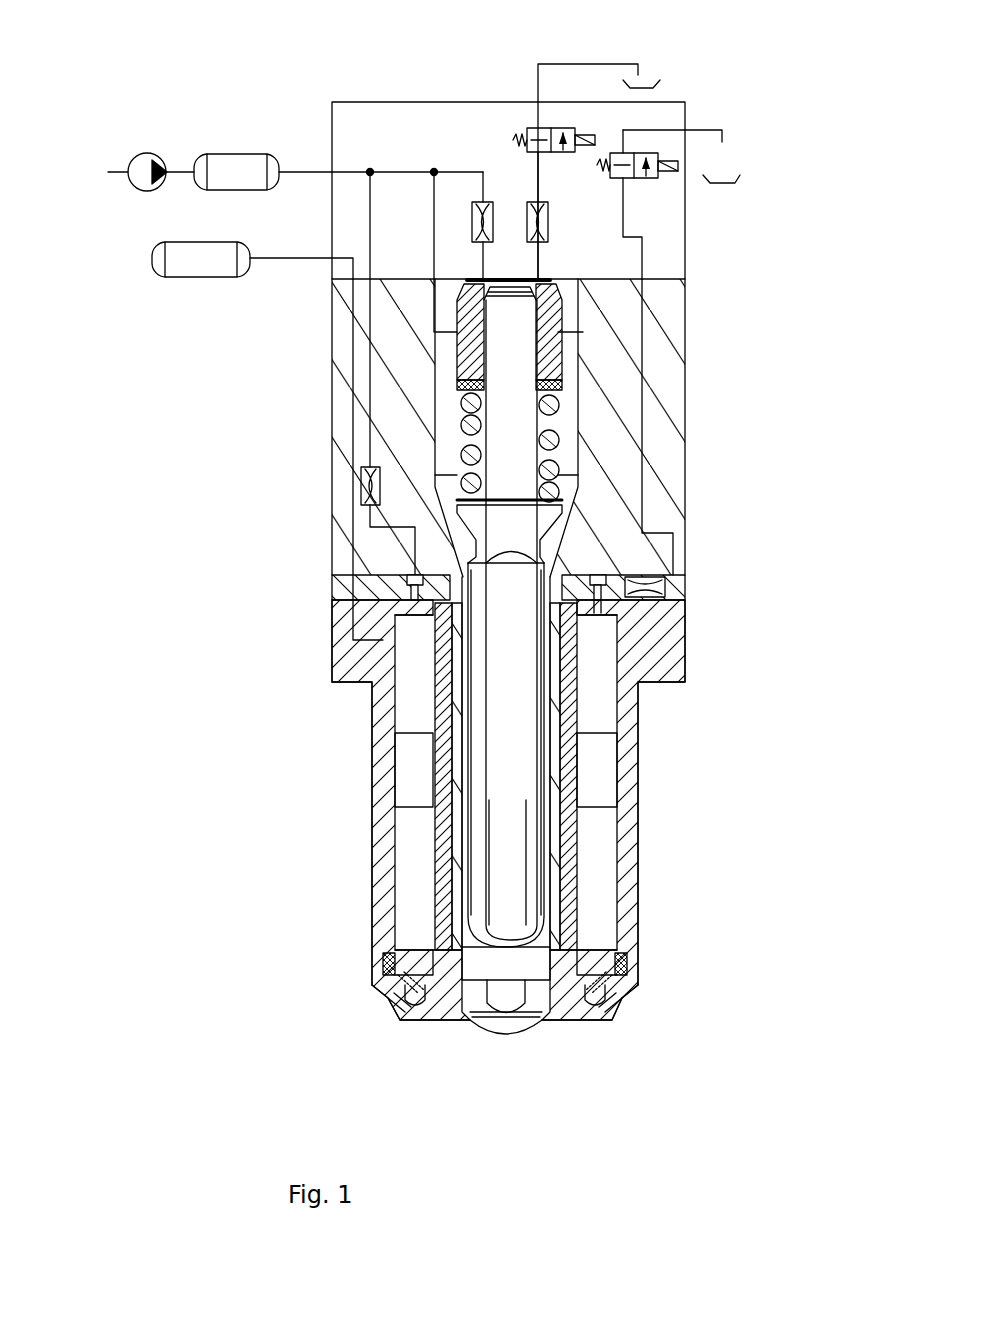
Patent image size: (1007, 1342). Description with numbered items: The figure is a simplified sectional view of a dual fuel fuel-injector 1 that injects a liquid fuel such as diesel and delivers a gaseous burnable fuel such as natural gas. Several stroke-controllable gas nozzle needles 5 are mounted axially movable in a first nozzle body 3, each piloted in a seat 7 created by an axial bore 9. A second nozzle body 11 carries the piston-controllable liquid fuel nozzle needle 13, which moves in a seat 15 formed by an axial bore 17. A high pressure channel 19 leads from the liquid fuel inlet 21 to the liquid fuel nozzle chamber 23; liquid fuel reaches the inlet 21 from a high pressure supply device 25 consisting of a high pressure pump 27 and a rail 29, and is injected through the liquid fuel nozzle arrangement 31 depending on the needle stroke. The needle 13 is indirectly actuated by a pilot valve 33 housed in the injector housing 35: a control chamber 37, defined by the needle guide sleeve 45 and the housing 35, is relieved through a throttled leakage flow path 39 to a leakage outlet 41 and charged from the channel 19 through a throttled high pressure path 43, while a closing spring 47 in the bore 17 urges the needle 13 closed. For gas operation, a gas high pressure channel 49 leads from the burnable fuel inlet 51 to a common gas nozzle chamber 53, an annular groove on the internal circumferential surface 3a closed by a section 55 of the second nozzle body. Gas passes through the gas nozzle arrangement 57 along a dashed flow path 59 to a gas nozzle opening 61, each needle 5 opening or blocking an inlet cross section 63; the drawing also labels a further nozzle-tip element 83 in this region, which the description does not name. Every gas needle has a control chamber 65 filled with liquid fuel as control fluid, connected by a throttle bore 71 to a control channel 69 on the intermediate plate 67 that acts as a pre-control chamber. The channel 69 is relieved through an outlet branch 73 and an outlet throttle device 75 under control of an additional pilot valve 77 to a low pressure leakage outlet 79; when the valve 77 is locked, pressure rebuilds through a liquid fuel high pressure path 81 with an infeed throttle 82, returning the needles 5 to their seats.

The dual fuel fuel-injector 1 is at (792, 119).
The first nozzle body 3 is at (632, 772).
The internal circumferential surface 3a is at (455, 840).
The gas nozzle needle 5 is at (604, 657).
The seat 7 is at (617, 853).
The axial bore 9 is at (617, 833).
The second nozzle body 11 is at (668, 387).
The liquid fuel nozzle needle 13 is at (527, 770).
The seat 15 is at (465, 655).
The axial bore 17 is at (462, 862).
The high pressure channel 19 is at (434, 190).
The liquid fuel inlet 21 is at (323, 178).
The liquid fuel nozzle chamber 23 is at (476, 968).
The high pressure supply device 25 is at (173, 148).
The high pressure pump 27 is at (142, 186).
The rail 29 is at (240, 165).
The liquid fuel nozzle arrangement 31 is at (522, 1025).
The pilot valve 33 is at (549, 163).
The injector housing 35 is at (445, 101).
The control chamber 37 is at (539, 278).
The leakage flow path 39 is at (535, 177).
The leakage outlet 41 is at (534, 96).
The high pressure path 43 is at (482, 273).
The needle guide sleeve 45 is at (462, 352).
The closing spring 47 is at (556, 408).
The gas high pressure channel 49 is at (350, 440).
The burnable fuel inlet 51 is at (323, 264).
The gas nozzle chamber 53 is at (426, 953).
The section of second nozzle body 55 is at (552, 705).
The gas nozzle arrangement 57 is at (364, 1011).
The flow path 59 is at (410, 1005).
The gas nozzle opening 61 is at (393, 1003).
The inlet cross section 63 is at (402, 969).
The control chamber 65 is at (418, 608).
The intermediate plate 67 is at (340, 592).
The control channel 69 is at (407, 577).
The throttle bore 71 is at (605, 612).
The outlet branch 73 is at (643, 477).
The outlet throttle device 75 is at (665, 590).
The additional pilot valve 77 is at (637, 204).
The leakage outlet 79 is at (694, 120).
The liquid fuel high pressure path 81 is at (370, 238).
The infeed throttle 82 is at (361, 482).
The inlet bore 83 is at (395, 962).